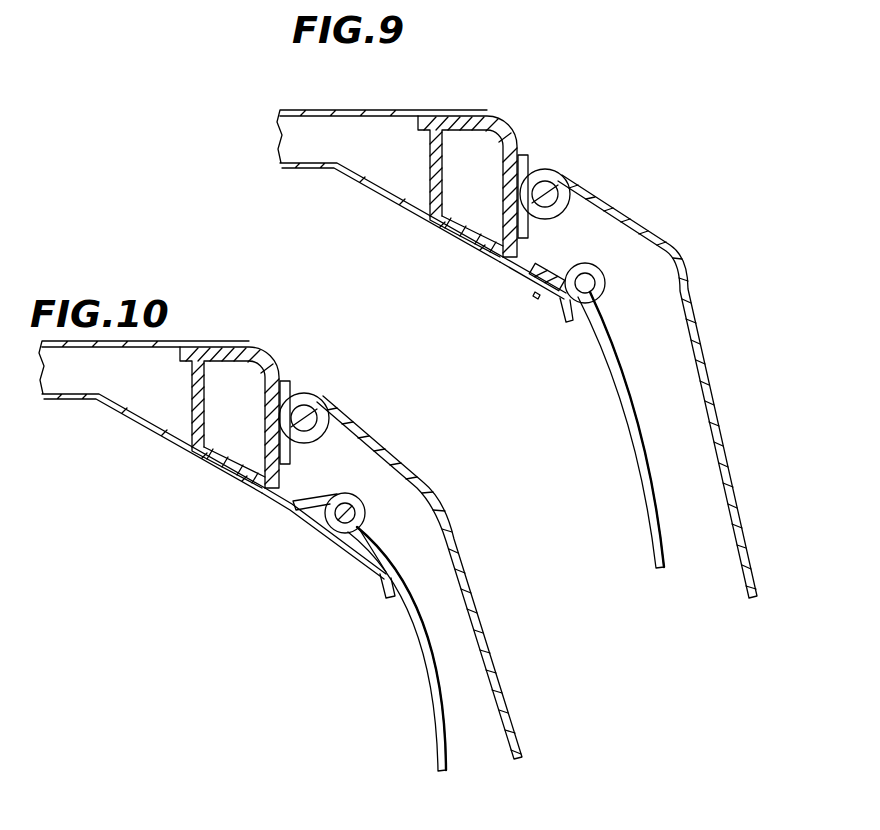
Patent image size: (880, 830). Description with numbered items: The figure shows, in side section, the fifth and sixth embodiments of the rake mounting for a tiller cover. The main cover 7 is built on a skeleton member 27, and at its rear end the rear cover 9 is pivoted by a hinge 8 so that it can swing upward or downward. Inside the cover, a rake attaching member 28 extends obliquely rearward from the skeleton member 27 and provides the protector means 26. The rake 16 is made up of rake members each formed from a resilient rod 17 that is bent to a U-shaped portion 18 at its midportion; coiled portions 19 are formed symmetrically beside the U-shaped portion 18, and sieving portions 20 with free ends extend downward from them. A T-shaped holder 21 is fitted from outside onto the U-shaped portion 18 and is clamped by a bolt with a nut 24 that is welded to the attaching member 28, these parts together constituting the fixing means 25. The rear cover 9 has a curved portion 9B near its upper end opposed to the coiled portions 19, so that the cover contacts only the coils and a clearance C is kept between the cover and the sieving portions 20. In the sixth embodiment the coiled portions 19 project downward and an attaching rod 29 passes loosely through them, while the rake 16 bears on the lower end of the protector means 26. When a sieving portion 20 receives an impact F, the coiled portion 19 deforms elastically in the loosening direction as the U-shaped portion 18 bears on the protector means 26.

In FIG. 9, the main cover 7 is at (332, 110).
In FIG. 10, the main cover 7 is at (88, 400).
In FIG. 9, the hinge 8 is at (545, 192).
In FIG. 10, the hinge 8 is at (305, 416).
In FIG. 9, the rear cover 9 is at (713, 405).
In FIG. 10, the rear cover 9 is at (484, 612).
In FIG. 9, the curved portion 9B is at (681, 264).
In FIG. 10, the curved portion 9B is at (441, 508).
In FIG. 9, the rake 16 is at (607, 386).
In FIG. 10, the rake 16 is at (431, 736).
In FIG. 10, the resilient rod 17 is at (409, 641).
In FIG. 9, the U-shaped portion 18 is at (520, 278).
In FIG. 10, the U-shaped portion 18 is at (285, 512).
In FIG. 9, the coiled portions 19 is at (605, 283).
In FIG. 10, the coiled portions 19 is at (348, 493).
In FIG. 9, the sieving portions 20 is at (645, 443).
In FIG. 10, the sieving portions 20 is at (448, 735).
In FIG. 9, the T-shaped holder 21 is at (557, 273).
In FIG. 9, the nut 24 is at (537, 297).
In FIG. 9, the fixing means 25 is at (542, 262).
In FIG. 10, the fixing means 25 is at (367, 489).
In FIG. 9, the protector means 26 is at (560, 318).
In FIG. 10, the protector means 26 is at (362, 557).
In FIG. 9, the skeleton member 27 is at (517, 133).
In FIG. 10, the skeleton member 27 is at (279, 375).
In FIG. 9, the rake attaching member 28 is at (462, 244).
In FIG. 10, the rake attaching member 28 is at (240, 486).
In FIG. 10, the attaching rod 29 is at (340, 533).
In FIG. 9, the clearance C is at (664, 362).
In FIG. 10, the clearance C is at (468, 672).
In FIG. 9, the impact F is at (561, 455).
In FIG. 10, the impact F is at (359, 718).